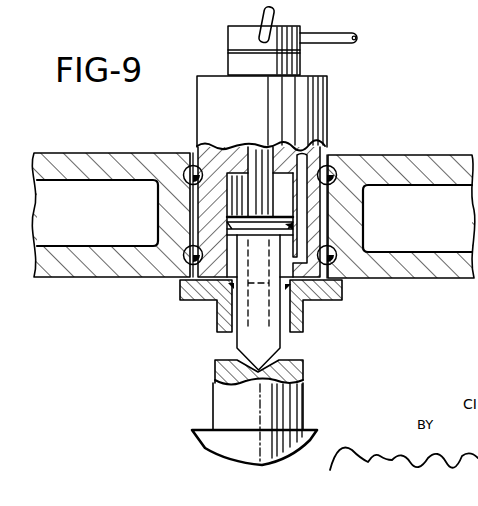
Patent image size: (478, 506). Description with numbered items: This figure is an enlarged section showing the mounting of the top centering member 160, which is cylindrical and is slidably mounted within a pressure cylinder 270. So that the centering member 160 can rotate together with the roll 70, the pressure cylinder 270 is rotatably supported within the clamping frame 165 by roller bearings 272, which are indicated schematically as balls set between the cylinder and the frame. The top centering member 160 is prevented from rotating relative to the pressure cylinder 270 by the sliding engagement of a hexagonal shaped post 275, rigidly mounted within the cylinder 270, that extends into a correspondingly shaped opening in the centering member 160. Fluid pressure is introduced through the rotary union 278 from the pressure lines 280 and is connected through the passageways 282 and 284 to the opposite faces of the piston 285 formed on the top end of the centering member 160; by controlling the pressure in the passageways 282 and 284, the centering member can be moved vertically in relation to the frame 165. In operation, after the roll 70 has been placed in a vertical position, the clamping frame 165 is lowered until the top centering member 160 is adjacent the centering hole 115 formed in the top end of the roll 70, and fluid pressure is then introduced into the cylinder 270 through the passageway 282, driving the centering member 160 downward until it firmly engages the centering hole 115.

The roll 70 is at (212, 425).
The centering hole 115 is at (248, 365).
The top centering member 160 is at (270, 338).
The clamping frame 165 is at (430, 165).
The pressure cylinder 270 is at (313, 107).
The roller bearings 272 is at (186, 250).
The hexagonal shaped post 275 is at (260, 149).
The rotary union 278 is at (233, 36).
The pressure lines 280 is at (275, 16).
The passageway 282 is at (286, 150).
The passageway 284 is at (310, 152).
The piston 285 is at (245, 216).